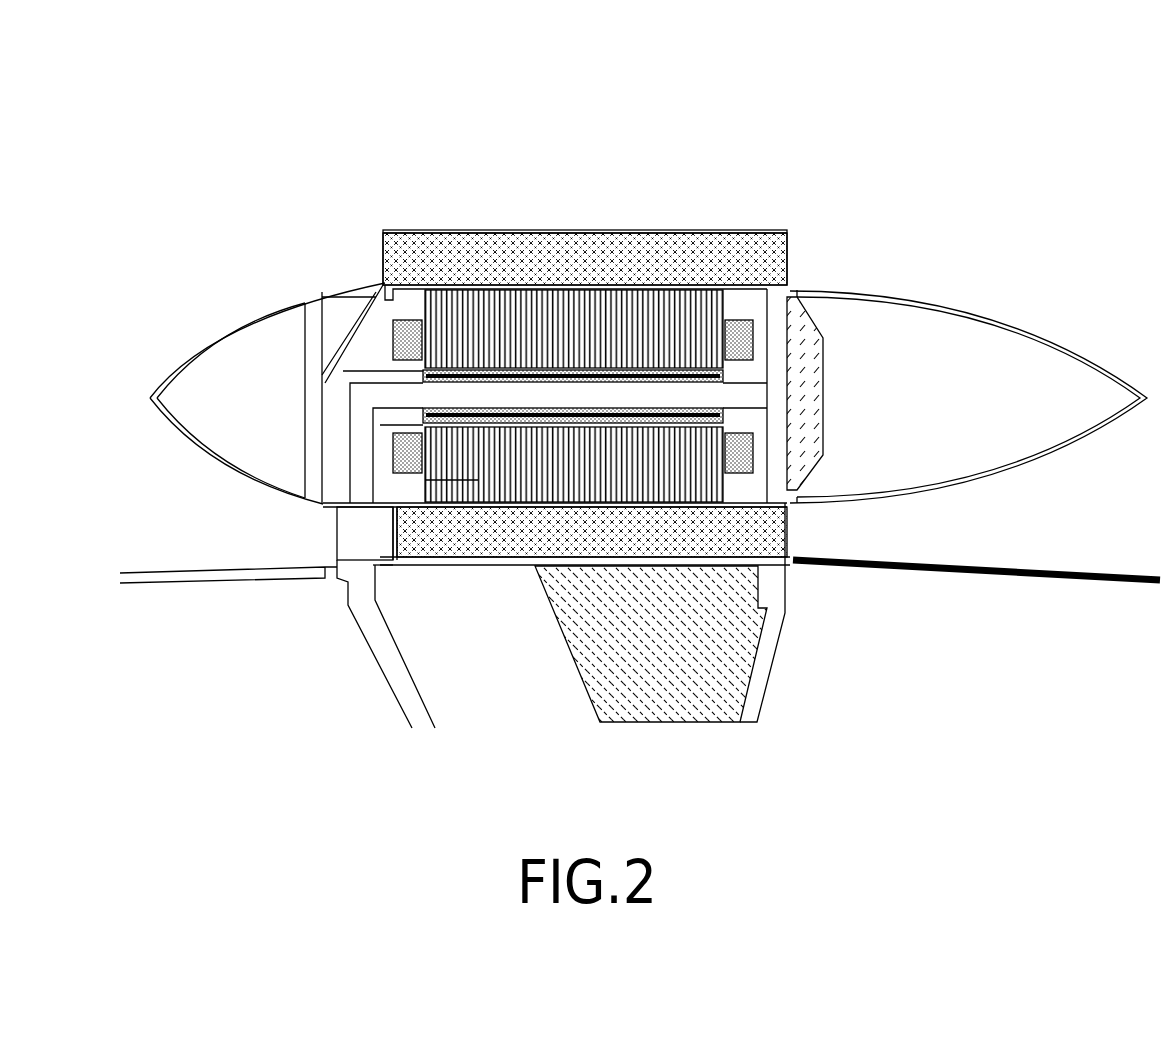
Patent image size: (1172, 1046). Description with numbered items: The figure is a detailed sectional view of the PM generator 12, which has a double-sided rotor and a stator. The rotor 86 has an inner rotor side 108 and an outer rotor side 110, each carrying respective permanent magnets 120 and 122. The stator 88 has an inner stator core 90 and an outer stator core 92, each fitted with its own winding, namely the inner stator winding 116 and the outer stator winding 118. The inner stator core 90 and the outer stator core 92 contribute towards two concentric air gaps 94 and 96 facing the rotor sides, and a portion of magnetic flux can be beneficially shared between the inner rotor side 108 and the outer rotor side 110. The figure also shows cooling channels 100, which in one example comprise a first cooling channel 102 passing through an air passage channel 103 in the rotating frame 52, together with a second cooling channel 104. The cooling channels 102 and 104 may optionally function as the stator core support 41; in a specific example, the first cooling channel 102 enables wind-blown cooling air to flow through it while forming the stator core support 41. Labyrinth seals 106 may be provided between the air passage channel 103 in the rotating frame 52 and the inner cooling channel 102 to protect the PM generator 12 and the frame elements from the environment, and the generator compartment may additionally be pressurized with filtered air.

The PM generator 12 is at (990, 181).
The stator core support 41 is at (478, 285).
The rotating frame 52 is at (393, 677).
The rotor 86 is at (727, 397).
The stator 88 is at (415, 450).
The inner stator core 90 is at (665, 478).
The outer stator core 92 is at (655, 315).
The air gap 94 is at (373, 425).
The air gap 96 is at (343, 366).
The cooling channels 100 is at (805, 262).
The first cooling channel 102 is at (690, 548).
The air passage channel 103 is at (414, 527).
The second cooling channel 104 is at (723, 255).
The labyrinth seals 106 is at (393, 563).
The inner rotor side 108 is at (478, 480).
The outer rotor side 110 is at (545, 375).
The inner stator winding 116 is at (740, 458).
The outer stator winding 118 is at (740, 337).
The permanent magnets 120 is at (722, 417).
The permanent magnets 122 is at (722, 377).